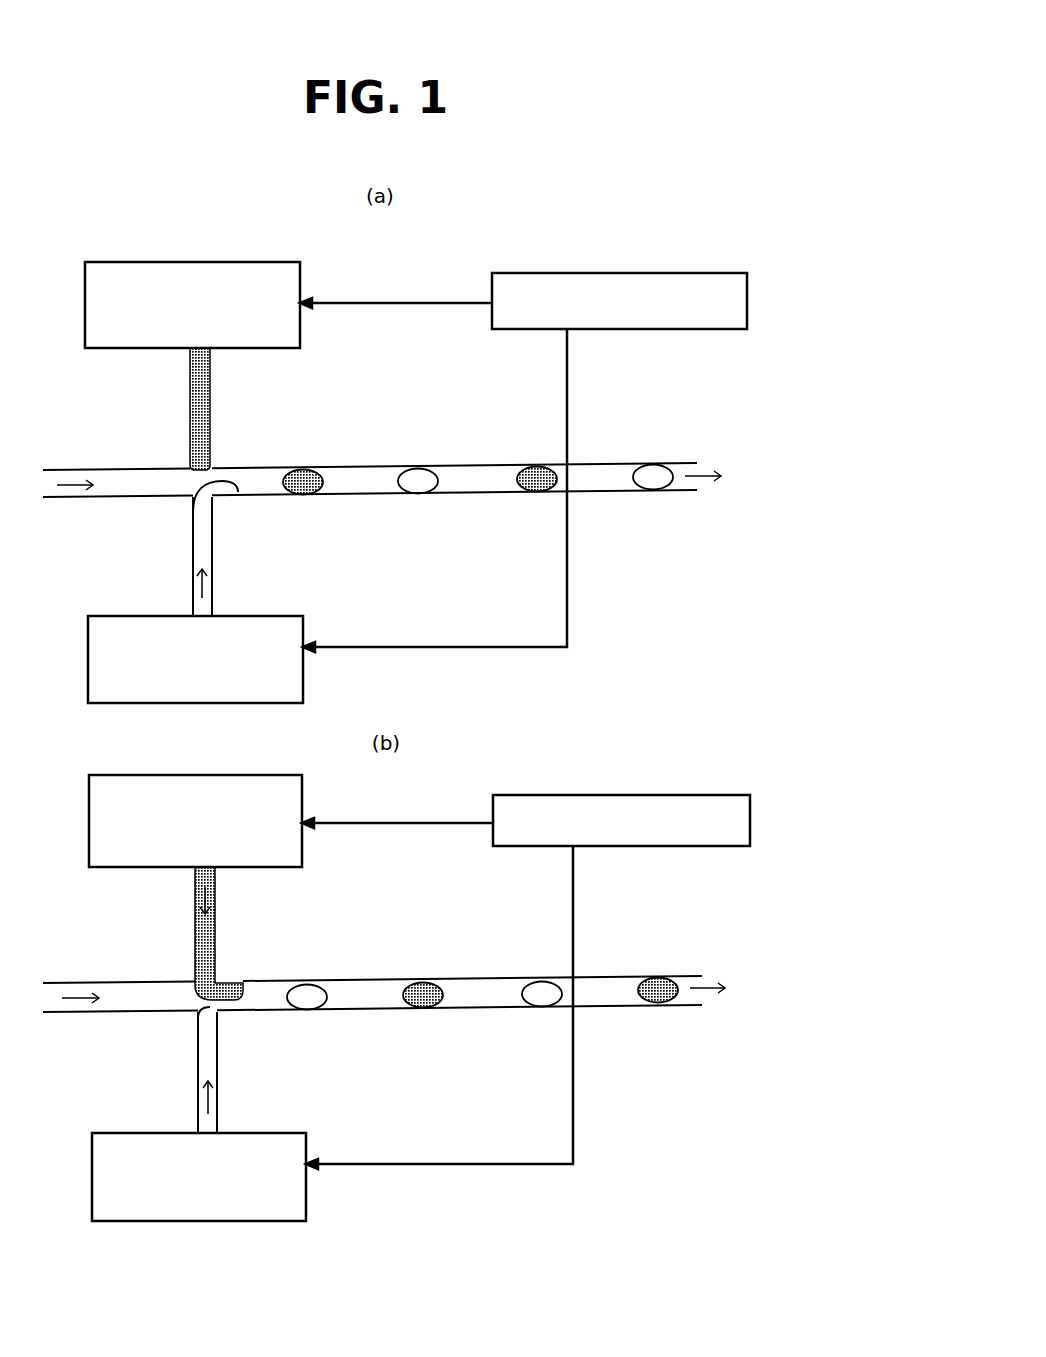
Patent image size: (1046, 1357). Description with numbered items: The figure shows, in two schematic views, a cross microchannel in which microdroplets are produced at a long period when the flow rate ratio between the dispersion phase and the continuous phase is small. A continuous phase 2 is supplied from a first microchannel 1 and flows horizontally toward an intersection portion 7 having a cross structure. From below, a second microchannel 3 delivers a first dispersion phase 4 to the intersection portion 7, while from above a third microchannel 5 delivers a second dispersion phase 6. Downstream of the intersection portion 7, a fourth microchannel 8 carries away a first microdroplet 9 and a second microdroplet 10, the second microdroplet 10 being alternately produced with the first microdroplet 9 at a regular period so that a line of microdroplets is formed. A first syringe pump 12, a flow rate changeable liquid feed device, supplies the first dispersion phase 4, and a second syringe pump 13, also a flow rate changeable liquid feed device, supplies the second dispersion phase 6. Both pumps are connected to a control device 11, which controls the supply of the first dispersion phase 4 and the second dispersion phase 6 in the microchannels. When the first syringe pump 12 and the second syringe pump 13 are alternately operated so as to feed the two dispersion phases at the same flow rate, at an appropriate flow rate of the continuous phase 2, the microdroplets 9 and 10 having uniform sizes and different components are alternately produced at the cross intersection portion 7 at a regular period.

The first microchannel 1 is at (56, 470).
The continuous phase 2 is at (80, 486).
The second microchannel 3 is at (212, 556).
The first dispersion phase 4 is at (207, 578).
The third microchannel 5 is at (211, 398).
The second dispersion phase 6 is at (211, 378).
The intersection portion 7 is at (195, 486).
The fourth microchannel 8 is at (366, 467).
The first microdroplet 9 is at (416, 468).
The second microdroplet 10 is at (304, 469).
The control device 11 is at (747, 290).
The syringe pump 12 is at (303, 634).
The syringe pump 13 is at (300, 288).